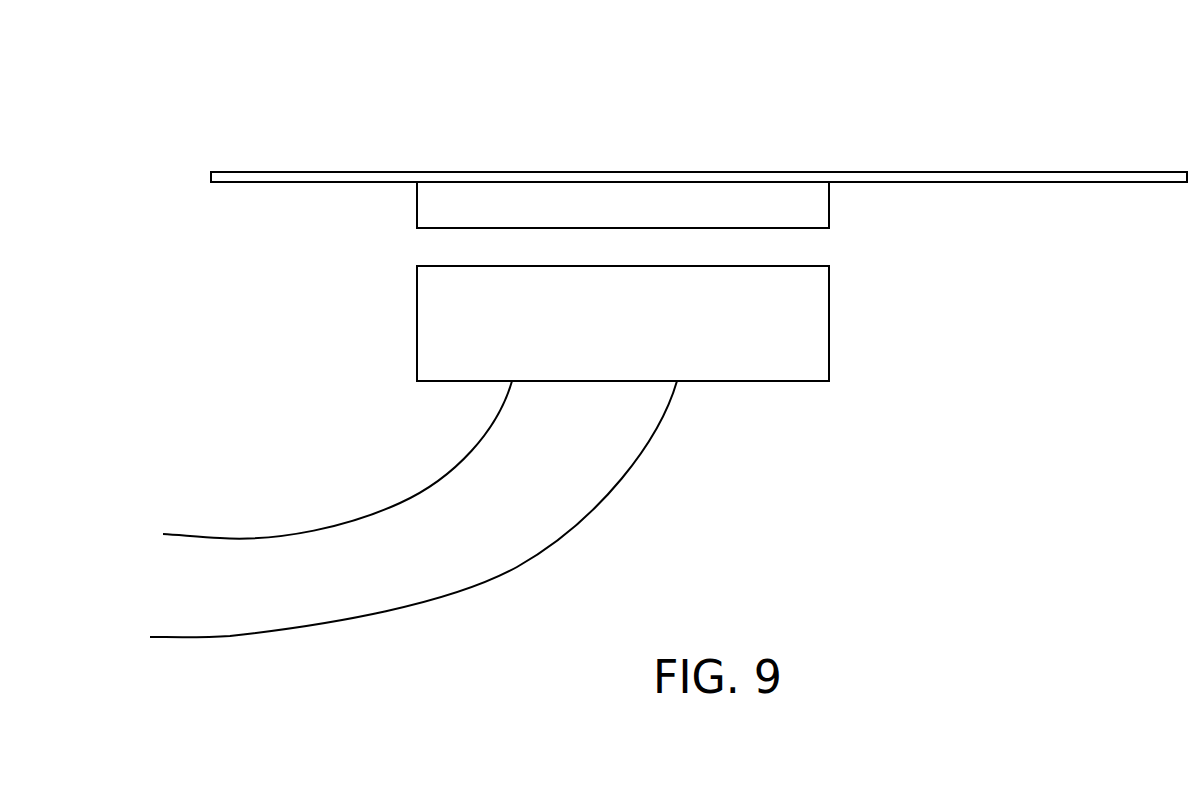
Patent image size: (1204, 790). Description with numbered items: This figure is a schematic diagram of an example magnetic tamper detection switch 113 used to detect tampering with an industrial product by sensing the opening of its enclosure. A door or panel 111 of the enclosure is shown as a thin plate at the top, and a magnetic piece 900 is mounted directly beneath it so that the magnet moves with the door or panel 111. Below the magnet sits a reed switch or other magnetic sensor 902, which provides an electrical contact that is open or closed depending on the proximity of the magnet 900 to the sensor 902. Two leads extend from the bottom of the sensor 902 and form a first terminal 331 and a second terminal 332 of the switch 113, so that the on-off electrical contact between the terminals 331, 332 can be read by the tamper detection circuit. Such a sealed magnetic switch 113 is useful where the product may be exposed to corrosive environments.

The magnetic tamper detection switch 113 is at (304, 78).
The door or panel 111 is at (250, 172).
The magnetic piece 900 is at (417, 211).
The reed switch or magnetic sensor 902 is at (417, 341).
The first terminal 331 is at (431, 478).
The second terminal 332 is at (518, 570).